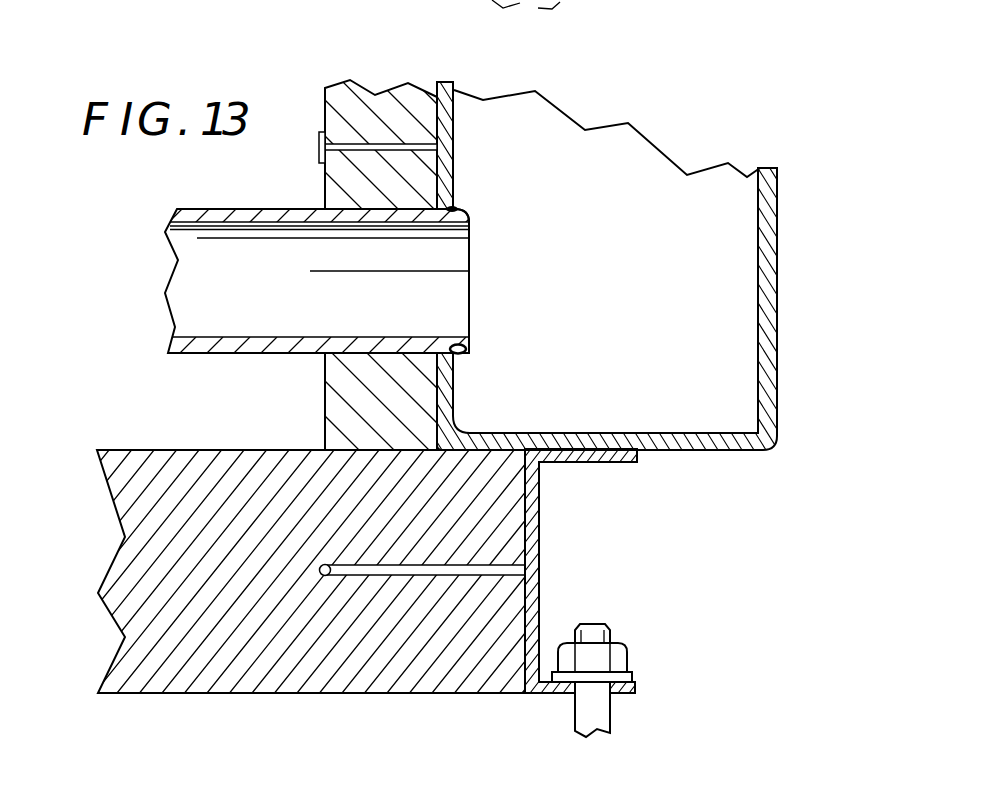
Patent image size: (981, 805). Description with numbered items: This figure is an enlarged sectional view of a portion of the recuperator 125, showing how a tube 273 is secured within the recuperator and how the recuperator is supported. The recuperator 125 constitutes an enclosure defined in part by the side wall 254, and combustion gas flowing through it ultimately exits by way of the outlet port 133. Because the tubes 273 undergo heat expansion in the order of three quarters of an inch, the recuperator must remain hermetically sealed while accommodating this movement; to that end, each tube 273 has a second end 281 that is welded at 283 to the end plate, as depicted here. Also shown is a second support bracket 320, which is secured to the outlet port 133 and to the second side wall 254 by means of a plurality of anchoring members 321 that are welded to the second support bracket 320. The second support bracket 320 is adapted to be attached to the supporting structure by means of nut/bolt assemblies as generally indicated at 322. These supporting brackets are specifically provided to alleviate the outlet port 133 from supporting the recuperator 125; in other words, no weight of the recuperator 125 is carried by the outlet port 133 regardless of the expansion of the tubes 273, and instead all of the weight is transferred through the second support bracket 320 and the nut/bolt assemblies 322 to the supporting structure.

The recuperator 125 is at (376, 62).
The outlet port 133 is at (702, 442).
The side wall 254 is at (307, 668).
The tube 273 is at (235, 357).
The second end 281 is at (427, 338).
The weld 283 is at (458, 350).
The second support bracket 320 is at (530, 513).
The anchoring member 321 is at (483, 569).
The nut/bolt assembly 322 is at (640, 648).